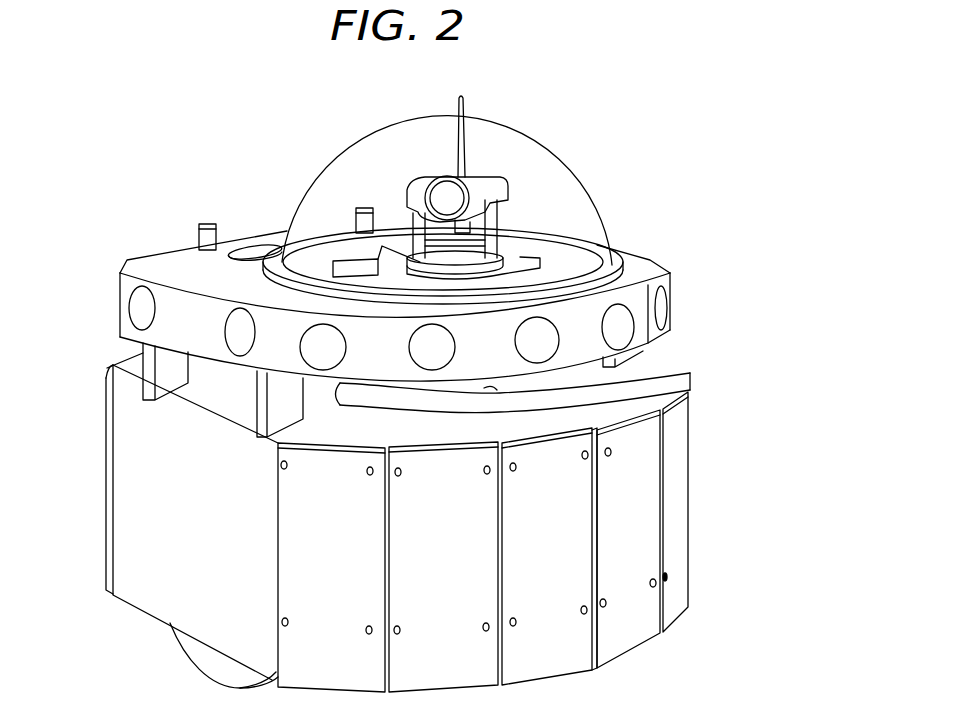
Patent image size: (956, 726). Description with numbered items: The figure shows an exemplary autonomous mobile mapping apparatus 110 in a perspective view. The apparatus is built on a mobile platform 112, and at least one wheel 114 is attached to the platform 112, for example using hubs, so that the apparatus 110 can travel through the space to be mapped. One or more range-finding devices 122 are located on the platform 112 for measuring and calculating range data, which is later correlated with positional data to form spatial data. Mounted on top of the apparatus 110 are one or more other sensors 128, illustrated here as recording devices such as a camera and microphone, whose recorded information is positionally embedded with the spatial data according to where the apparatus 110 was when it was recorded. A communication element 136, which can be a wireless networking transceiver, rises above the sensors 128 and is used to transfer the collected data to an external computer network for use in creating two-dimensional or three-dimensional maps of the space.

The autonomous mobile mapping apparatus 110 is at (724, 195).
The mobile platform 112 is at (687, 507).
The wheel 114 is at (207, 678).
The range-finding device 122 is at (610, 373).
The sensor 128 is at (407, 196).
The communication element 136 is at (470, 112).